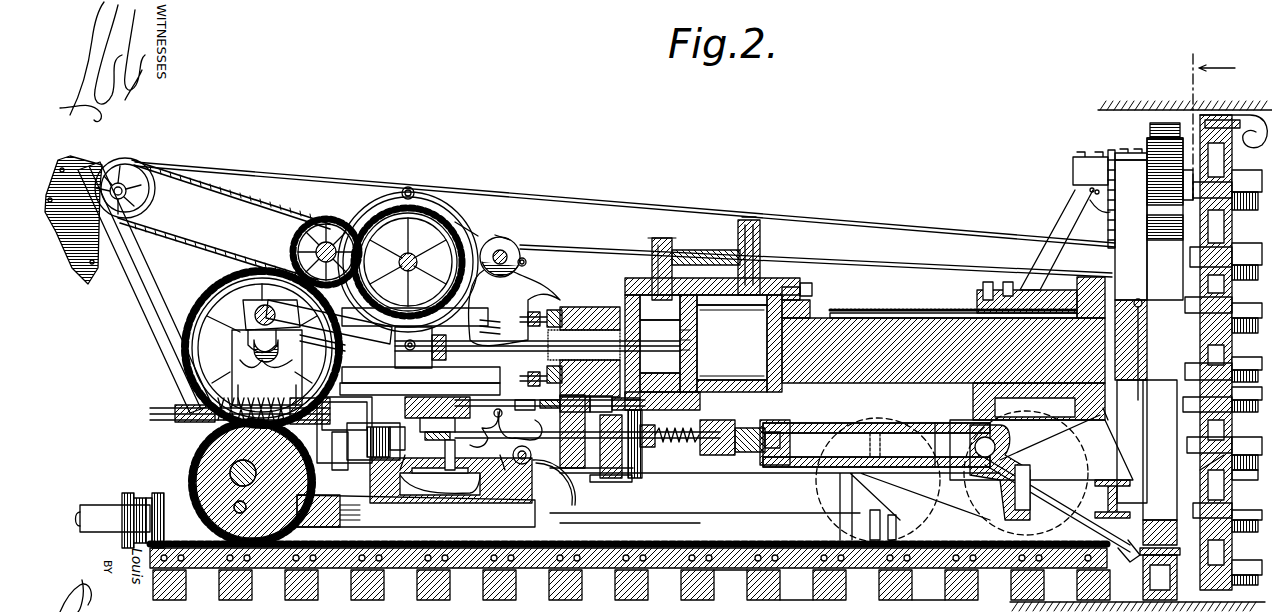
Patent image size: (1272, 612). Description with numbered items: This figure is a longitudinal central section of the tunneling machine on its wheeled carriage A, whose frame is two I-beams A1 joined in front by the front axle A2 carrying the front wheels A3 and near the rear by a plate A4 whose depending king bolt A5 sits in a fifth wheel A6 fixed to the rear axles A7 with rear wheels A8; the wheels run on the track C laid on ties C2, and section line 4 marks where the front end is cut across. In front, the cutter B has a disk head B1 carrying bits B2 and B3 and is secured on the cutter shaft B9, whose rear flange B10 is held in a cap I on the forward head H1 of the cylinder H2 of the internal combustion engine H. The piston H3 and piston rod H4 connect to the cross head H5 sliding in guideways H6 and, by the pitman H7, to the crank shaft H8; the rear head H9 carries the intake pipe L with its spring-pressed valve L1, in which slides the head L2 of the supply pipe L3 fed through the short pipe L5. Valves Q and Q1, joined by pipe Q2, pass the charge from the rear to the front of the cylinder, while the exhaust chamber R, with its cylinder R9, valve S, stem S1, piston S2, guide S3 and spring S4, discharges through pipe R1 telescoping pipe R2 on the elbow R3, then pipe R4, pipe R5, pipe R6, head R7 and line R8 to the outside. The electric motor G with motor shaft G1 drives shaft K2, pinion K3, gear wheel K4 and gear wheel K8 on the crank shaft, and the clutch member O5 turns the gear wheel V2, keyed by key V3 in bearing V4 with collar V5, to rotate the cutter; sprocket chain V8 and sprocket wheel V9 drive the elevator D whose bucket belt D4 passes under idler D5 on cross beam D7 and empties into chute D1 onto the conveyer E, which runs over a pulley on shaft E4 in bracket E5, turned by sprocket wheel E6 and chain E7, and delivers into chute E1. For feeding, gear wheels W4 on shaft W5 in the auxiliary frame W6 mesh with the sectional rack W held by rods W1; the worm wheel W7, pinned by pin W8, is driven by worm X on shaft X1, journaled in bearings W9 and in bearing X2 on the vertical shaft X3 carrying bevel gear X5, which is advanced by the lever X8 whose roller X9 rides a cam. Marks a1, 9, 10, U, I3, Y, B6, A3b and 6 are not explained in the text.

The section line 4— 4 is at (1210, 117).
The section line 6 is at (1141, 601).
The conveyer E is at (840, 225).
The chute E1 is at (80, 255).
The shaft E4 is at (118, 191).
The bracket E5 is at (148, 310).
The sprocket wheel E6 is at (150, 203).
The sprocket chain E7 is at (238, 207).
The transversely-extending shaft K2 is at (316, 222).
The pinion K3 is at (366, 228).
The gear wheel K4 is at (466, 243).
The gear wheel K8 is at (196, 303).
The motor G is at (368, 205).
The motor shaft G1 is at (406, 253).
The pivot pin a1 is at (301, 298).
The internal combustion engine H is at (700, 250).
The forward head H1 is at (786, 288).
The cylinder H2 is at (625, 292).
The piston H3 is at (716, 348).
The piston rod H4 is at (548, 345).
The cross head H5 is at (348, 340).
The guideways H6 is at (370, 388).
The pitman H7 is at (340, 340).
The crank shaft H8 is at (240, 342).
The rear head H9 is at (603, 307).
The worm X is at (494, 246).
The longitudinally-extending shaft X1 is at (344, 419).
The bearing X2 is at (437, 410).
The vertical shaft X3 is at (478, 442).
The bevel gear wheel X5 is at (387, 438).
The lever X8 is at (530, 296).
The friction roller X9 is at (530, 252).
The clutch member O5 is at (508, 250).
The pin 10 is at (504, 224).
The pin 9 is at (418, 348).
The block U is at (411, 353).
The valve Q is at (652, 252).
The valve Q1 is at (762, 250).
The pipe Q2 is at (716, 262).
The bearing or cap I is at (800, 305).
The pin I3 is at (526, 410).
The intake pipe L is at (550, 418).
The spring-pressed valve L1 is at (664, 360).
The head L2 is at (611, 421).
The supply pipe L3 is at (543, 414).
The short pipe L5 is at (592, 413).
The roller Y is at (520, 441).
The cutter B is at (1231, 352).
The head B1 is at (1205, 475).
The bits B2 is at (1240, 472).
The bits B3 is at (1233, 141).
The plate B6 is at (1194, 240).
The cutter shaft B9 is at (912, 325).
The annular flange B10 is at (802, 308).
The gear wheel V2 is at (1050, 282).
The key V3 is at (970, 312).
The bearing V4 is at (1040, 400).
The collar V5 is at (978, 290).
The sprocket chain V8 is at (1103, 236).
The sprocket wheel V9 is at (1106, 152).
The elevator D is at (1184, 185).
The chute D1 is at (1146, 150).
The endless bucket belt D4 is at (1148, 460).
The idler D5 is at (1178, 573).
The cross beam D7 is at (1108, 502).
The wheeled carriage A is at (608, 478).
The I-beams A1 is at (1041, 444).
The front axle A2 is at (1062, 505).
The front wheels A3 is at (988, 520).
The post A3b is at (326, 475).
The plate A4 is at (358, 430).
The king bolt A5 is at (490, 502).
The fifth wheel A6 is at (428, 500).
The rear axles A7 is at (554, 482).
The rear wheels A8 is at (620, 512).
The exhaust chamber R is at (758, 462).
The pipe R1 is at (868, 440).
The pipe R2 is at (950, 430).
The elbow R3 is at (1008, 448).
The pipe R4 is at (878, 480).
The longitudinally extending pipe R5 is at (818, 515).
The pipe R6 is at (140, 495).
The head R7 is at (170, 500).
The line of pipe R8 is at (100, 518).
The cylinder R9 is at (710, 435).
The valve S is at (768, 455).
The valve stem S1 is at (684, 460).
The piston S2 is at (740, 455).
The guide S3 is at (628, 470).
The spring S4 is at (675, 426).
The sectional rack W is at (684, 542).
The transverse rods W1 is at (712, 572).
The gear wheels W4 is at (186, 443).
The transverse shaft W5 is at (328, 511).
The auxiliary frame W6 is at (416, 511).
The worm wheel W7 is at (182, 465).
The removable transverse pin W8 is at (272, 570).
The bearings W9 is at (175, 410).
The track C is at (796, 593).
The ties C2 is at (928, 588).